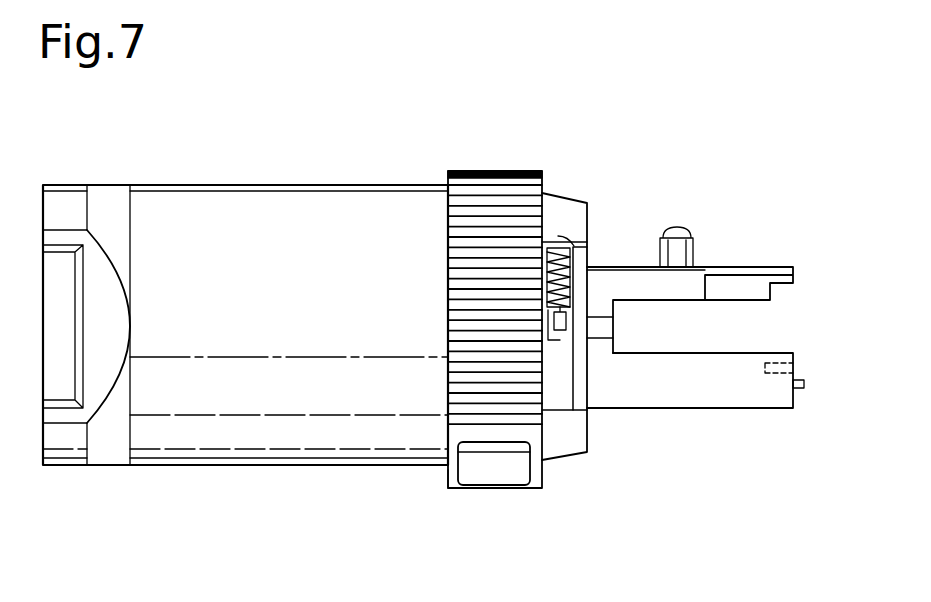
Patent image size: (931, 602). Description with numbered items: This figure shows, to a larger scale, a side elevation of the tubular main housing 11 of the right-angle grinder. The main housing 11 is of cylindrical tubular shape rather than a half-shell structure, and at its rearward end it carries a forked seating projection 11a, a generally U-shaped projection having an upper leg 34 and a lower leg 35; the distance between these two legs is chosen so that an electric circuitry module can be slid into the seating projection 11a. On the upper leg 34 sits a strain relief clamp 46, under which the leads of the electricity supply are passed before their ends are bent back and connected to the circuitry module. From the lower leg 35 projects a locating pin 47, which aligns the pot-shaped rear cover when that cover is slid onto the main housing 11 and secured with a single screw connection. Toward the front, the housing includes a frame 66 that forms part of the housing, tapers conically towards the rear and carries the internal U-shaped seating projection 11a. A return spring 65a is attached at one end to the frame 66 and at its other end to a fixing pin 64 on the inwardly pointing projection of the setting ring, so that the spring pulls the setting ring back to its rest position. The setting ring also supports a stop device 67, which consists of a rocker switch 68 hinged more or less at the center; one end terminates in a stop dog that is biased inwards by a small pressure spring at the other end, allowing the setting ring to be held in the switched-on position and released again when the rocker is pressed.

The main housing 11 is at (203, 470).
The forked seating projection 11a is at (705, 264).
The upper leg 34 is at (748, 263).
The lower leg 35 is at (732, 410).
The strain relief clamp 46 is at (684, 226).
The locating pin 47 is at (798, 395).
The fixing pin 64 is at (562, 322).
The return spring 65a is at (573, 247).
The frame 66 is at (560, 210).
The stop device 67 is at (450, 477).
The rocker switch 68 is at (473, 495).